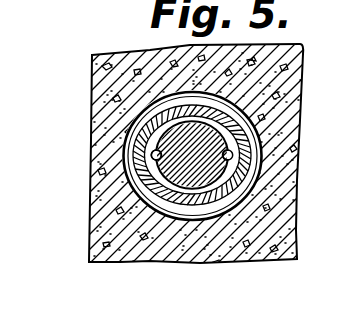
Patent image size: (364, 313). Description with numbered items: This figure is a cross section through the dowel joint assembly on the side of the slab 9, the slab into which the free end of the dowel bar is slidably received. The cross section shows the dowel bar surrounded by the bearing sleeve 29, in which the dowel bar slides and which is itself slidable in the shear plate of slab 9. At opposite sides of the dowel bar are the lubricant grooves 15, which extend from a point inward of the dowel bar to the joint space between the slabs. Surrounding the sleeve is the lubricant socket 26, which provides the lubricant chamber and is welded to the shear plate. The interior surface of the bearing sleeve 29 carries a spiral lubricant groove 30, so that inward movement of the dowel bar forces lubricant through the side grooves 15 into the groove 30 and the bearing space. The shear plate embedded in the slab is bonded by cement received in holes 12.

The slab 9 is at (296, 91).
The holes 12 is at (199, 176).
The lubricant grooves 15 is at (228, 155).
The lubricant socket 26 is at (258, 170).
The bearing sleeve 29 is at (148, 132).
The lubricant groove 30 is at (157, 155).